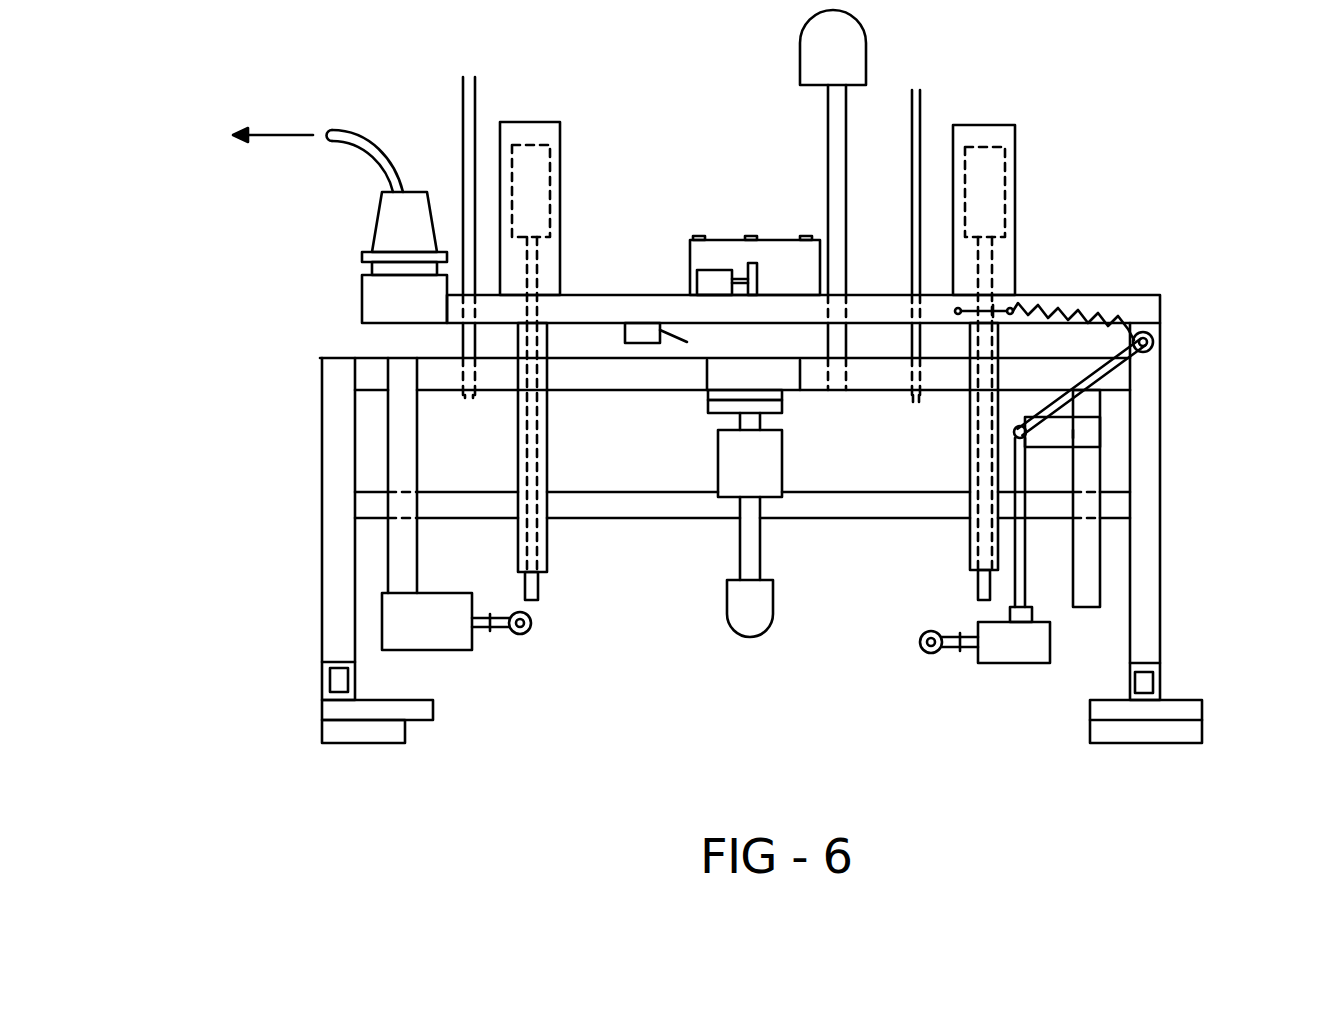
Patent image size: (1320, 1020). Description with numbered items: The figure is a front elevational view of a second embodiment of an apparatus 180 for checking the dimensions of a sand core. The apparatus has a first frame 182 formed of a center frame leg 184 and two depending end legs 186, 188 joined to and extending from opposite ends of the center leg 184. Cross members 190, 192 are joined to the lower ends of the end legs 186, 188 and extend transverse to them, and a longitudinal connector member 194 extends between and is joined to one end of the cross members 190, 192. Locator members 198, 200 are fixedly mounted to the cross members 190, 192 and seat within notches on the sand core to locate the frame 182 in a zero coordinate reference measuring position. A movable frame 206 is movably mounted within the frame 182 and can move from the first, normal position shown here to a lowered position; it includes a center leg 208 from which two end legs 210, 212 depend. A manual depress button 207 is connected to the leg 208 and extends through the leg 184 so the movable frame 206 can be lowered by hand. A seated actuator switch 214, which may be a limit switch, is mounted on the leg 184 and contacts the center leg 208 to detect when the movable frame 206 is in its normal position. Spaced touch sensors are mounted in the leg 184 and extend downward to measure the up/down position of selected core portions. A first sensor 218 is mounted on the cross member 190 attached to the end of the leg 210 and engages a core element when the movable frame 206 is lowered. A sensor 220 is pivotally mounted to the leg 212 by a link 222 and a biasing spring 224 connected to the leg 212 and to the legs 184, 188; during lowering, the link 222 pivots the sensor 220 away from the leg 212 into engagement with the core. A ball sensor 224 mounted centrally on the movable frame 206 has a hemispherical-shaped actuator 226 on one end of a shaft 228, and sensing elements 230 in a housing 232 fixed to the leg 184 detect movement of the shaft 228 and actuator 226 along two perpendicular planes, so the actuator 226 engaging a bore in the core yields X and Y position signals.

The apparatus 180 is at (248, 260).
The first frame 182 is at (1073, 303).
The center frame leg 184 is at (1106, 300).
The end leg 186 is at (330, 477).
The end leg 188 is at (1148, 422).
The cross member 190 is at (322, 683).
The cross member 192 is at (1160, 682).
The longitudinal connector member 194 is at (428, 500).
The locator member 198 is at (335, 733).
The locator member 200 is at (1152, 737).
The movable frame 206 is at (404, 357).
The manual depress button 207 is at (838, 137).
The center leg 208 is at (580, 375).
The end leg 210 is at (407, 580).
The end leg 212 is at (1095, 575).
The seated actuator switch 214 is at (653, 343).
The first sensor 218 is at (452, 638).
The sensor 220 is at (1003, 653).
The link 222 is at (1132, 373).
The ball sensor 224 is at (763, 543).
The hemispherical-shaped actuator 226 is at (763, 603).
The shaft 228 is at (752, 565).
The sensing elements 230 is at (707, 268).
The housing 232 is at (725, 227).